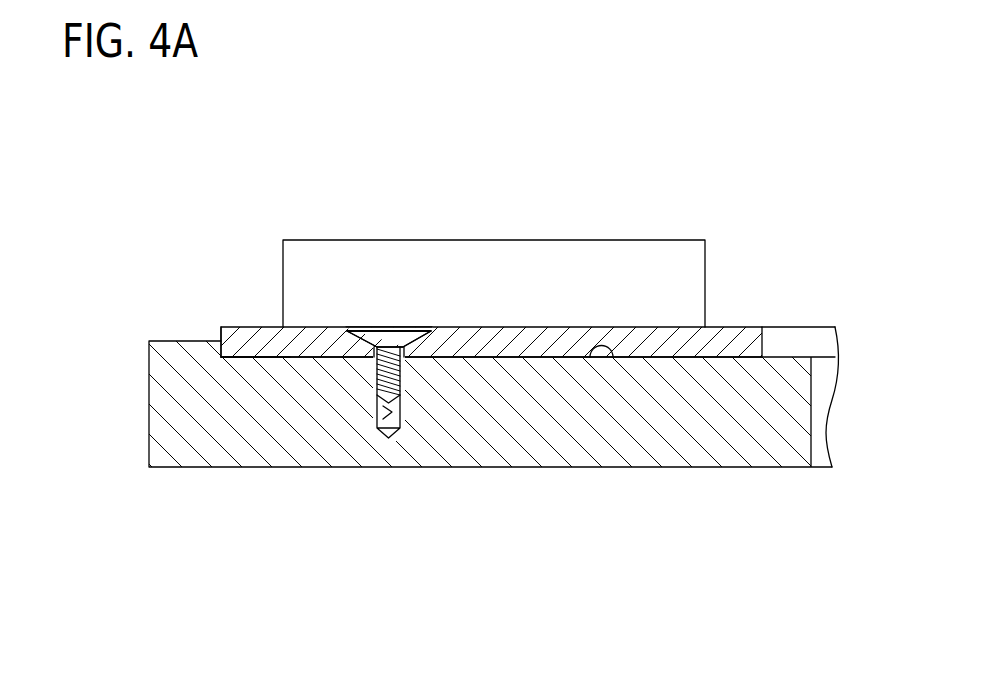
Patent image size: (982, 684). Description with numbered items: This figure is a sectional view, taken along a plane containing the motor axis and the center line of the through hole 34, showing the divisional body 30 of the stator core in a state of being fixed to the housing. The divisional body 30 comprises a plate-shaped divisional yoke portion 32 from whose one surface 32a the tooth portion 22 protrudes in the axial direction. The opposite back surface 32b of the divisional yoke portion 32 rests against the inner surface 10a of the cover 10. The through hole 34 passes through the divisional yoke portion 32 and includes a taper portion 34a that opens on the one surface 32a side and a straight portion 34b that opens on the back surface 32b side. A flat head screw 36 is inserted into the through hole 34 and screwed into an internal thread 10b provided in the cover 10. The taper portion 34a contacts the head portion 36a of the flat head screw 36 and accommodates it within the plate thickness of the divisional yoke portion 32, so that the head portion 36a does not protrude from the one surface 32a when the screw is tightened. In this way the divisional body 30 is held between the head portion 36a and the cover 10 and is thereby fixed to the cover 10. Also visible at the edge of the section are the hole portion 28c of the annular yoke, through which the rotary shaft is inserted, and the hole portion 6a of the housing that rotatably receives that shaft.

The divisional body 30 is at (785, 152).
The tooth portion 22 is at (620, 263).
The divisional yoke portion 32 is at (749, 327).
The one surface 32a is at (238, 327).
The back surface 32b is at (247, 358).
The through hole 34 is at (370, 368).
The taper portion 34a is at (363, 330).
The straight portion 34b is at (375, 368).
The flat head screw 36 is at (401, 376).
The head portion 36a is at (388, 333).
The cover 10 is at (713, 468).
The inner surface 10a is at (613, 358).
The internal thread 10b is at (374, 420).
The hole portion 28c is at (762, 341).
The hole portion 6a is at (812, 449).